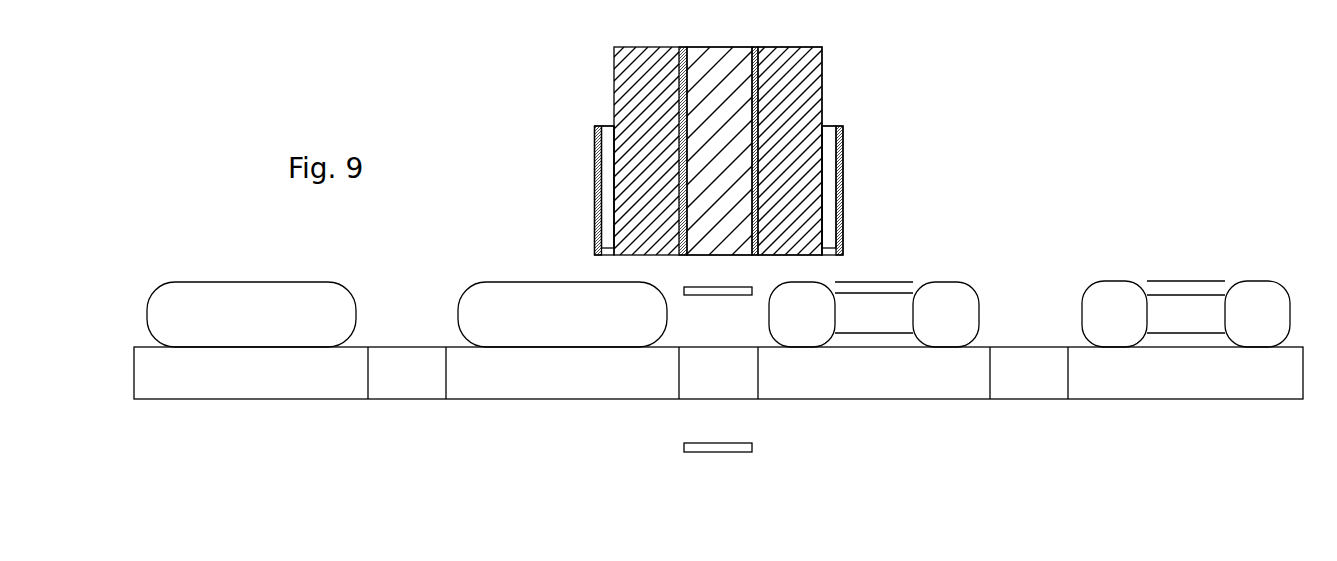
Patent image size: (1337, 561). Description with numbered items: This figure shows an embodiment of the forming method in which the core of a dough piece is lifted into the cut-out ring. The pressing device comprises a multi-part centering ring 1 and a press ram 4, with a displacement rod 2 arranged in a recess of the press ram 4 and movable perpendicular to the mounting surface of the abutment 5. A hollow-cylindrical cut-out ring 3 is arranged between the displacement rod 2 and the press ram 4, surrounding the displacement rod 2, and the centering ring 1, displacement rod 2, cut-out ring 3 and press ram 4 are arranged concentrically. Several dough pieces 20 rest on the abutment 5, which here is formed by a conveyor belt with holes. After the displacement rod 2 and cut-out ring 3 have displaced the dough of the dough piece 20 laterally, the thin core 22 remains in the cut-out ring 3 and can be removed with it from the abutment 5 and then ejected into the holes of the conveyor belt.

The centering ring 1 is at (595, 128).
The displacement rod 2 is at (723, 93).
The cut-out ring 3 is at (679, 207).
The press ram 4 is at (797, 153).
The abutment 5 is at (837, 376).
The dough piece 20 is at (310, 319).
The core 22 is at (718, 292).